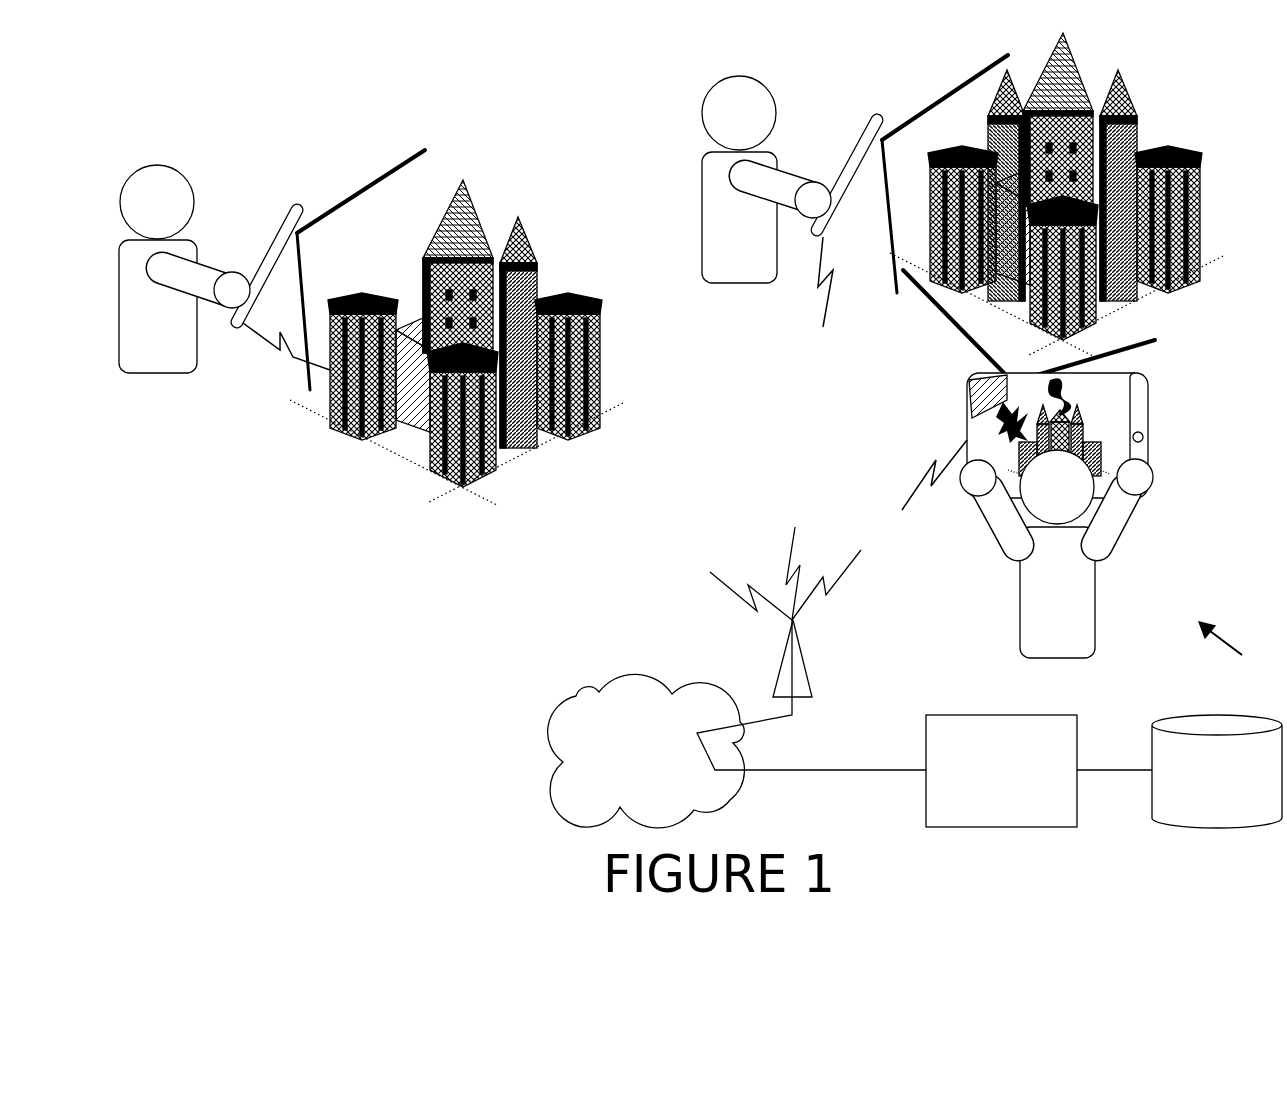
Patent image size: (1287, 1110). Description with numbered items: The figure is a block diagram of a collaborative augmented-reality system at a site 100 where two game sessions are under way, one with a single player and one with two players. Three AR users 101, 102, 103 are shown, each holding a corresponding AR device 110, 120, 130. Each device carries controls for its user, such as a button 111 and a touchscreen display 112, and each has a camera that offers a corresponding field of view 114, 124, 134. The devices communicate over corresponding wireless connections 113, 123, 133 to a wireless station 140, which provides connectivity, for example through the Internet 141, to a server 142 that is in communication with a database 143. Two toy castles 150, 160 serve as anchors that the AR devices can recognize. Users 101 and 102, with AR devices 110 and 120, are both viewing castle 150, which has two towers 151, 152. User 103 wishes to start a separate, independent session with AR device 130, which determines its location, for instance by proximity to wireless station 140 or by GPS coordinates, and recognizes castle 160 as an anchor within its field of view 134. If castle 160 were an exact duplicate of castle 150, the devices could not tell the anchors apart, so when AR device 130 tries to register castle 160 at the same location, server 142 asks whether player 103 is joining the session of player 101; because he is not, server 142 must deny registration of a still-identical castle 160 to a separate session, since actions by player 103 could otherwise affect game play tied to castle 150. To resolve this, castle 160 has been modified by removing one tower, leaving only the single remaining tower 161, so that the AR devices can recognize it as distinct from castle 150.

The site 100 is at (1241, 644).
The AR user 101 is at (1052, 509).
The AR user 102 is at (747, 179).
The AR user 103 is at (208, 255).
The AR device 110 is at (1052, 429).
The button 111 is at (1143, 446).
The touchscreen display 112 is at (1113, 386).
The wireless connection 113 is at (918, 484).
The field of view 114 is at (952, 320).
The AR device 120 is at (868, 118).
The wireless connection 123 is at (816, 305).
The field of view 124 is at (957, 87).
The AR device 130 is at (297, 212).
The wireless connection 133 is at (283, 355).
The field of view 134 is at (393, 168).
The wireless station 140 is at (777, 675).
The Internet 141 is at (628, 680).
The server 142 is at (983, 713).
The database 143 is at (1209, 712).
The toy castle 150 is at (1078, 73).
The tower 151 is at (1132, 97).
The tower 152 is at (991, 127).
The toy castle 160 is at (476, 212).
The tower 161 is at (536, 244).